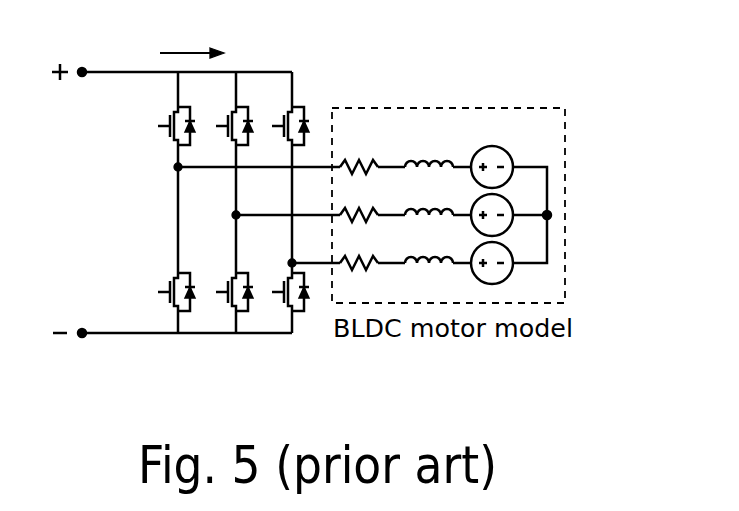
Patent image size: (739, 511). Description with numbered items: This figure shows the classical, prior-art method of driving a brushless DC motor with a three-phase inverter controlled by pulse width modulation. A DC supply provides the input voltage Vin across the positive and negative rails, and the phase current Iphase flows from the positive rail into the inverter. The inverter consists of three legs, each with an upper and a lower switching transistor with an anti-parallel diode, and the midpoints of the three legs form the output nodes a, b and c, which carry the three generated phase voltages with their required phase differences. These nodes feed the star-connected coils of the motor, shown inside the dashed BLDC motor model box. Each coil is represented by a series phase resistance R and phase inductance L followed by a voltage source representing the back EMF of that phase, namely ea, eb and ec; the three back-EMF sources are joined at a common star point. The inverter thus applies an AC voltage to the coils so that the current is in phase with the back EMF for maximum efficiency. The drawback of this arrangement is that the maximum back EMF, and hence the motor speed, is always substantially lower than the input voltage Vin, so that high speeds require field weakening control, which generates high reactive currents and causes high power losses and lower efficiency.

The phase current Iphase is at (158, 50).
The input voltage Vin is at (76, 197).
The phase node a is at (244, 167).
The phase node b is at (276, 214).
The phase node c is at (303, 261).
The phase resistance R is at (359, 197).
The phase inductance L is at (429, 194).
The back EMF source of phase a ea is at (507, 153).
The back EMF source of phase b eb is at (510, 205).
The back EMF source of phase c ec is at (510, 252).